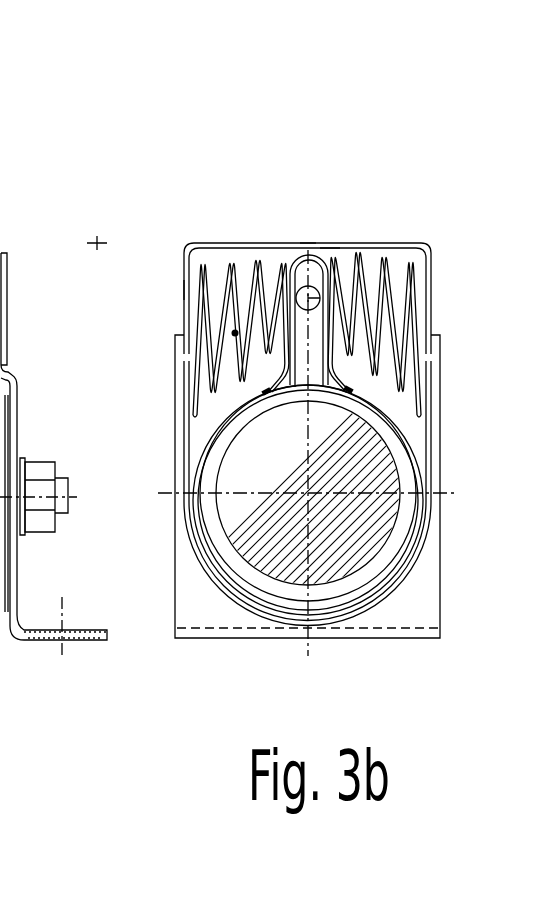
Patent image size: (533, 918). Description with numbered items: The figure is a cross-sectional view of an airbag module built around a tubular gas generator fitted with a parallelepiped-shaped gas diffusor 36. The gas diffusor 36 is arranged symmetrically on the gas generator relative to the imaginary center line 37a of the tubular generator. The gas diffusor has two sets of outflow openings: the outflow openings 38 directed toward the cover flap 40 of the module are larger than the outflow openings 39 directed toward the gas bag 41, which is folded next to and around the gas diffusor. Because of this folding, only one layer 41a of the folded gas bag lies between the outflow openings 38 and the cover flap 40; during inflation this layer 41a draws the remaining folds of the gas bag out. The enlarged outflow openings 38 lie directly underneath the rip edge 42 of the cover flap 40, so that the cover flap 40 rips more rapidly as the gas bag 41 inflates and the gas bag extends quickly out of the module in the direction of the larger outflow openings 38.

The gas diffusor 36 is at (323, 337).
The imaginary center line 37a is at (313, 278).
The outflow openings 38 is at (308, 257).
The outflow openings 39 is at (290, 298).
The cover flap 40 is at (400, 240).
The gas bag 41 is at (183, 290).
The layer of the folded gas bag 41a is at (327, 252).
The rip edge 42 is at (301, 229).